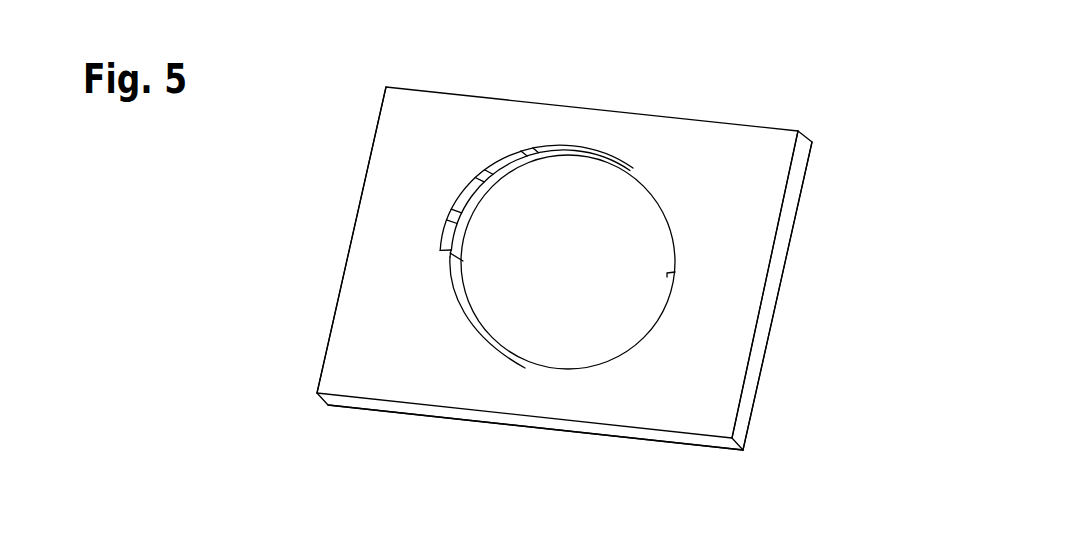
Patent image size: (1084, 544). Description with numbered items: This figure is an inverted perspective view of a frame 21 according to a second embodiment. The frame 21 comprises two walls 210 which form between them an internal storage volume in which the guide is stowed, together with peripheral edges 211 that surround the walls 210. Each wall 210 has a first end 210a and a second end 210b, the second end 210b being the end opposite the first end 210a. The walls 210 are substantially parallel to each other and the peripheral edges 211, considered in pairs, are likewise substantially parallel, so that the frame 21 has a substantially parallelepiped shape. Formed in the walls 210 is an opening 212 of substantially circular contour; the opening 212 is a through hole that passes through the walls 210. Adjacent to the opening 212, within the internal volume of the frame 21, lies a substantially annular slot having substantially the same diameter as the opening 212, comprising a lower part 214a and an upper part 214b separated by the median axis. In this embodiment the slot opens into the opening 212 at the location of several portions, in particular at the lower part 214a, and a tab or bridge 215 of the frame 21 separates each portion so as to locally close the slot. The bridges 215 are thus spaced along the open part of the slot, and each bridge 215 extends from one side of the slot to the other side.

The frame 21 is at (806, 86).
The wall 210 is at (718, 307).
The first end 210a is at (365, 176).
The second end 210b is at (787, 203).
The peripheral edge 211 is at (785, 245).
The opening 212 is at (618, 317).
The lower part 214a is at (565, 143).
The upper part 214b is at (547, 372).
The bridge 215 is at (533, 148).